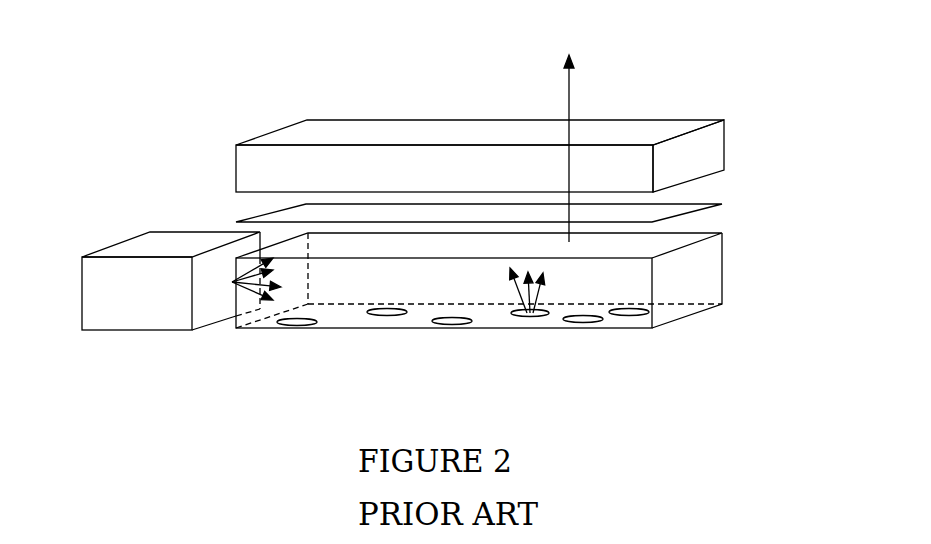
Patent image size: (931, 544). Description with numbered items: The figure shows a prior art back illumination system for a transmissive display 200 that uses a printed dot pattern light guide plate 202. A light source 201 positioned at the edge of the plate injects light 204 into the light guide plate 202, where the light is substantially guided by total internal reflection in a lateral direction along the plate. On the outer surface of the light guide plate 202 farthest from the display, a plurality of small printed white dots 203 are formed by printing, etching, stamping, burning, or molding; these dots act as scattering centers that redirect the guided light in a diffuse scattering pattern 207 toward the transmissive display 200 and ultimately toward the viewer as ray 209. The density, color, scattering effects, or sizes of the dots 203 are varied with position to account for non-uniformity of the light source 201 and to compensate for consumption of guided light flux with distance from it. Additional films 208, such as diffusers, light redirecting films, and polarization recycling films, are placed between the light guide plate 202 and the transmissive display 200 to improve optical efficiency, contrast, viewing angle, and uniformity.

The transmissive display 200 is at (712, 153).
The light source 201 is at (138, 240).
The light guide plate 202 is at (708, 275).
The printed white dots 203 is at (450, 318).
The light 204 is at (245, 293).
The diffuse scattering pattern 207 is at (543, 295).
The additional films 208 is at (720, 212).
The ray 209 is at (573, 82).